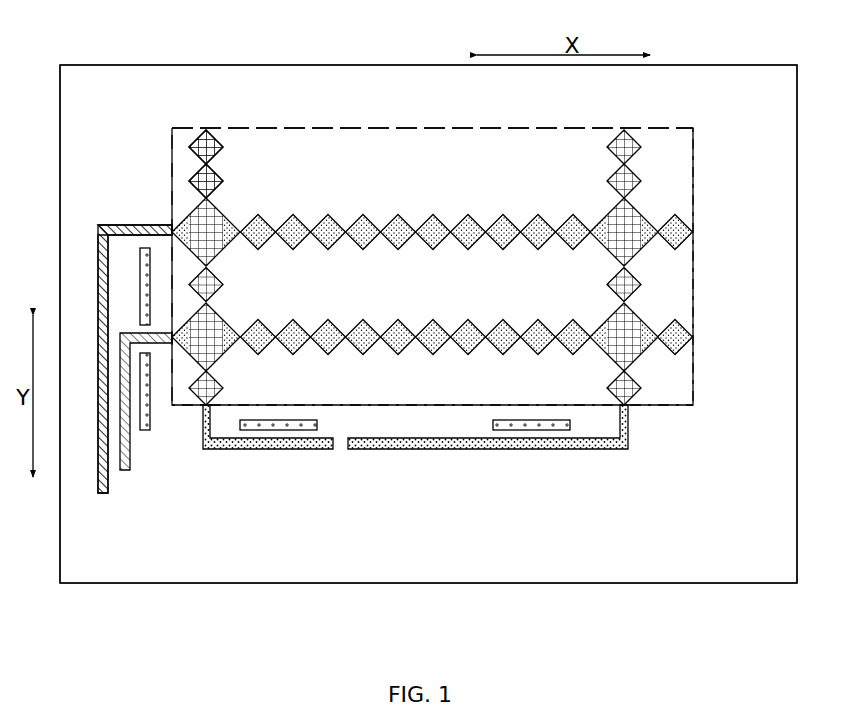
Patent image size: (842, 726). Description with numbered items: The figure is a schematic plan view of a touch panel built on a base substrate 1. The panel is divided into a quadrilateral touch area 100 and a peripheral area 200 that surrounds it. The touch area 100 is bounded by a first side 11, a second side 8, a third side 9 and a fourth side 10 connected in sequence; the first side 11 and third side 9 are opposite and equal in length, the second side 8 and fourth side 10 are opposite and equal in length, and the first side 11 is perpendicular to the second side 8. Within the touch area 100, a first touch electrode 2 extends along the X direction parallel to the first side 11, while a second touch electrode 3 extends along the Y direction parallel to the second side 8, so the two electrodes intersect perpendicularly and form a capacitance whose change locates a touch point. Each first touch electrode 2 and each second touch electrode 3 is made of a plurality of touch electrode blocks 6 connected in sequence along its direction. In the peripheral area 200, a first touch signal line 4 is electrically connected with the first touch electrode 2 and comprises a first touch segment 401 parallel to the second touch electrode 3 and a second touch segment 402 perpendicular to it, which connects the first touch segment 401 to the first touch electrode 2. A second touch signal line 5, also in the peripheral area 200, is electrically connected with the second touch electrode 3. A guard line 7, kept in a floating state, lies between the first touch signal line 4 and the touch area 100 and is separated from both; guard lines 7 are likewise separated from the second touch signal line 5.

The base substrate 1 is at (203, 65).
The peripheral area 200 is at (316, 88).
The touch area 100 is at (398, 128).
The third side 9 is at (470, 130).
The second side 8 is at (693, 300).
The first side 11 is at (468, 405).
The fourth side 10 is at (172, 190).
The first touch electrode 2 is at (427, 325).
The second touch electrode 3 is at (222, 284).
The touch electrode block 6 is at (218, 177).
The second touch segment 402 is at (140, 225).
The first touch segment 401 is at (98, 310).
The first touch signal line 4 is at (127, 470).
The guard line 7 is at (146, 283).
The second touch signal line 5 is at (280, 450).